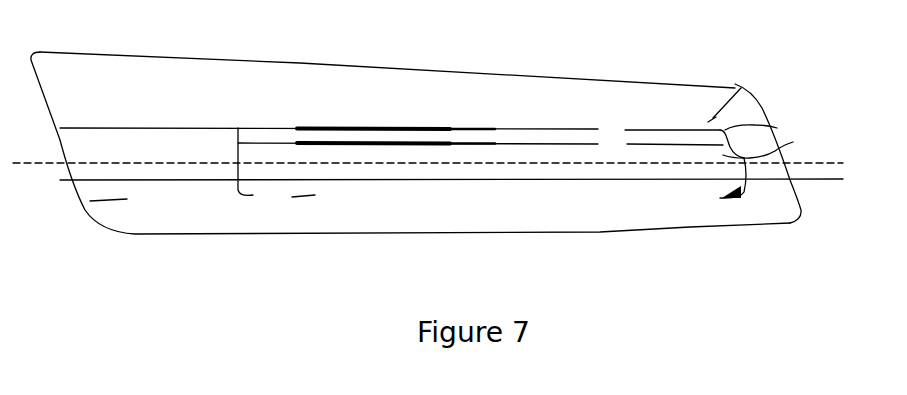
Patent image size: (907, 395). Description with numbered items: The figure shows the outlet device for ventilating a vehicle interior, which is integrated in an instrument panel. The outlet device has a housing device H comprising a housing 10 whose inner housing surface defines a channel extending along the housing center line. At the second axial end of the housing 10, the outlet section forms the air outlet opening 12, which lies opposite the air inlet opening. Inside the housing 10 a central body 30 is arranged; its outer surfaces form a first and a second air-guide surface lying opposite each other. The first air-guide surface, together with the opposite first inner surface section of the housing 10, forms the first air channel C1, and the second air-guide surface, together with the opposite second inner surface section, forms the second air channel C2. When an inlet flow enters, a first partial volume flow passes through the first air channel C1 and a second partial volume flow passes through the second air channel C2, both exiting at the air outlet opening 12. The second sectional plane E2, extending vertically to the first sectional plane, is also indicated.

The housing 10 is at (780, 123).
The housing device H is at (748, 85).
The second sectional plane E2 is at (53, 163).
The first air channel C1 is at (391, 161).
The second air channel C2 is at (451, 190).
The central body 30 is at (793, 142).
The air outlet opening 12 is at (713, 203).